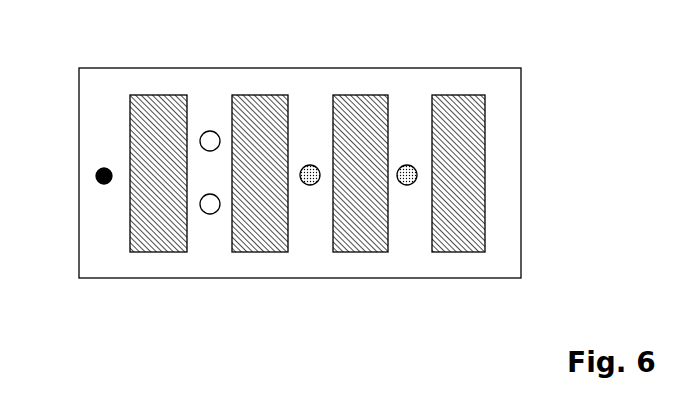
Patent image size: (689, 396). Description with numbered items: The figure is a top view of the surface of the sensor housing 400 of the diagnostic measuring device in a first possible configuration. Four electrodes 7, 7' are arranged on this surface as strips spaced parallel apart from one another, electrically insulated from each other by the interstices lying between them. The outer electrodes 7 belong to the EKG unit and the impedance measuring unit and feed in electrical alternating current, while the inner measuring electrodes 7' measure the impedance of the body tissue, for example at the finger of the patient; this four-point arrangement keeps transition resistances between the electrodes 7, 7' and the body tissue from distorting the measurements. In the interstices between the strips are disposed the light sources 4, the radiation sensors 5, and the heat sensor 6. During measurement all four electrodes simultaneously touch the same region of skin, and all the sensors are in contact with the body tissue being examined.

The housing 400 is at (521, 163).
The electrodes 7 is at (307, 222).
The measuring electrodes 7' is at (310, 222).
The light sources 4 is at (204, 196).
The radiation sensors 5 is at (313, 166).
The heat sensor 6 is at (99, 183).